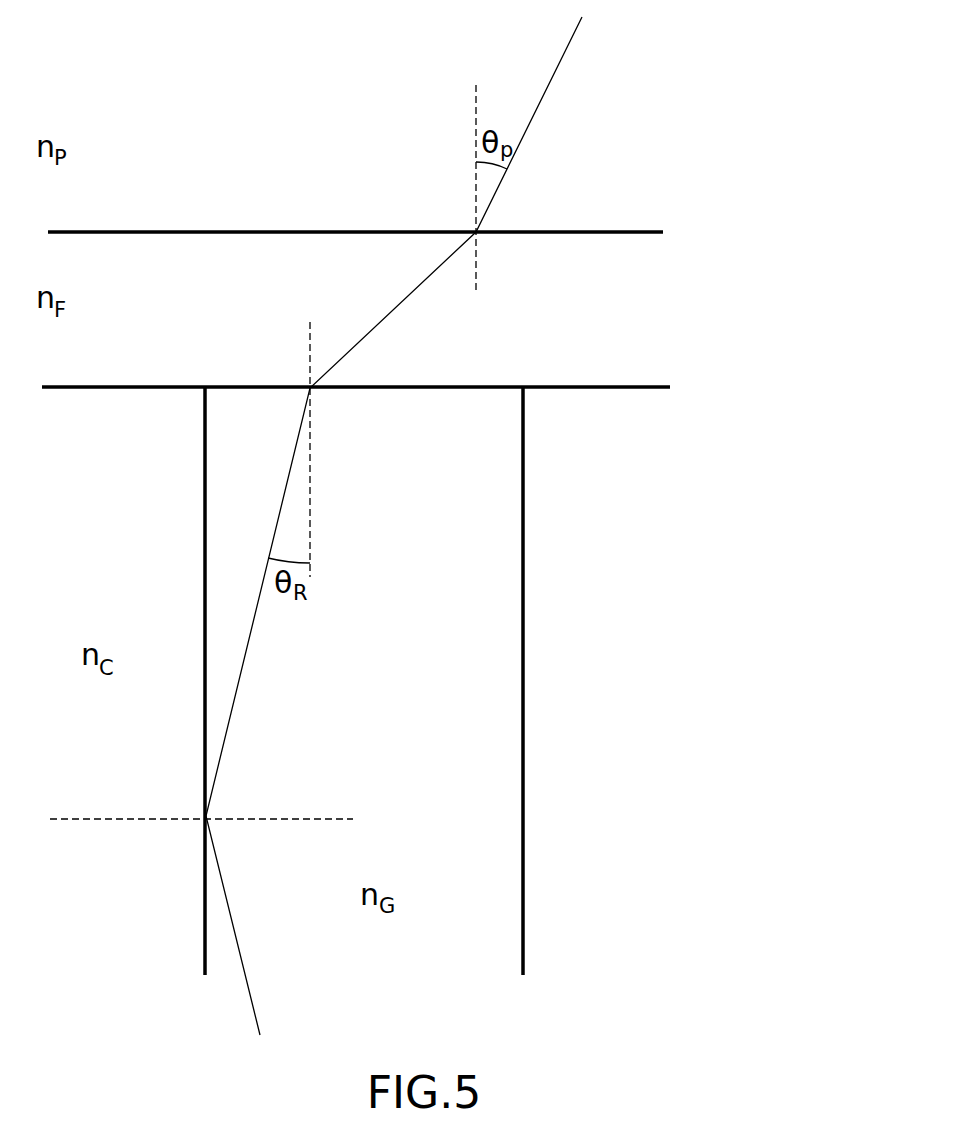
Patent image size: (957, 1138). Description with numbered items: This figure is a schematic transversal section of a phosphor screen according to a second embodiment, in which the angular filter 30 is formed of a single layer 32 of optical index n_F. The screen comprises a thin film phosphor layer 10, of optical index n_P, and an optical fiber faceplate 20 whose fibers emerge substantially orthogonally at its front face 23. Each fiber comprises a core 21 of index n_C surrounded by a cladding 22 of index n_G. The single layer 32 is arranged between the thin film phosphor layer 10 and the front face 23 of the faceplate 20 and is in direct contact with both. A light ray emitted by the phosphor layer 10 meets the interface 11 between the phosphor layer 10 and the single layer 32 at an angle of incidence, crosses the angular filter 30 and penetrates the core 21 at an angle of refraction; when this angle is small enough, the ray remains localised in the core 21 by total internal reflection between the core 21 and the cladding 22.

The thin film phosphor layer 10 is at (597, 136).
The interface 11 is at (643, 231).
The single layer 32 is at (638, 323).
The angular filter 30 is at (694, 292).
The front face 23 is at (641, 389).
The optical fiber faceplate 20 is at (649, 632).
The core 21 is at (442, 760).
The cladding 22 is at (572, 760).